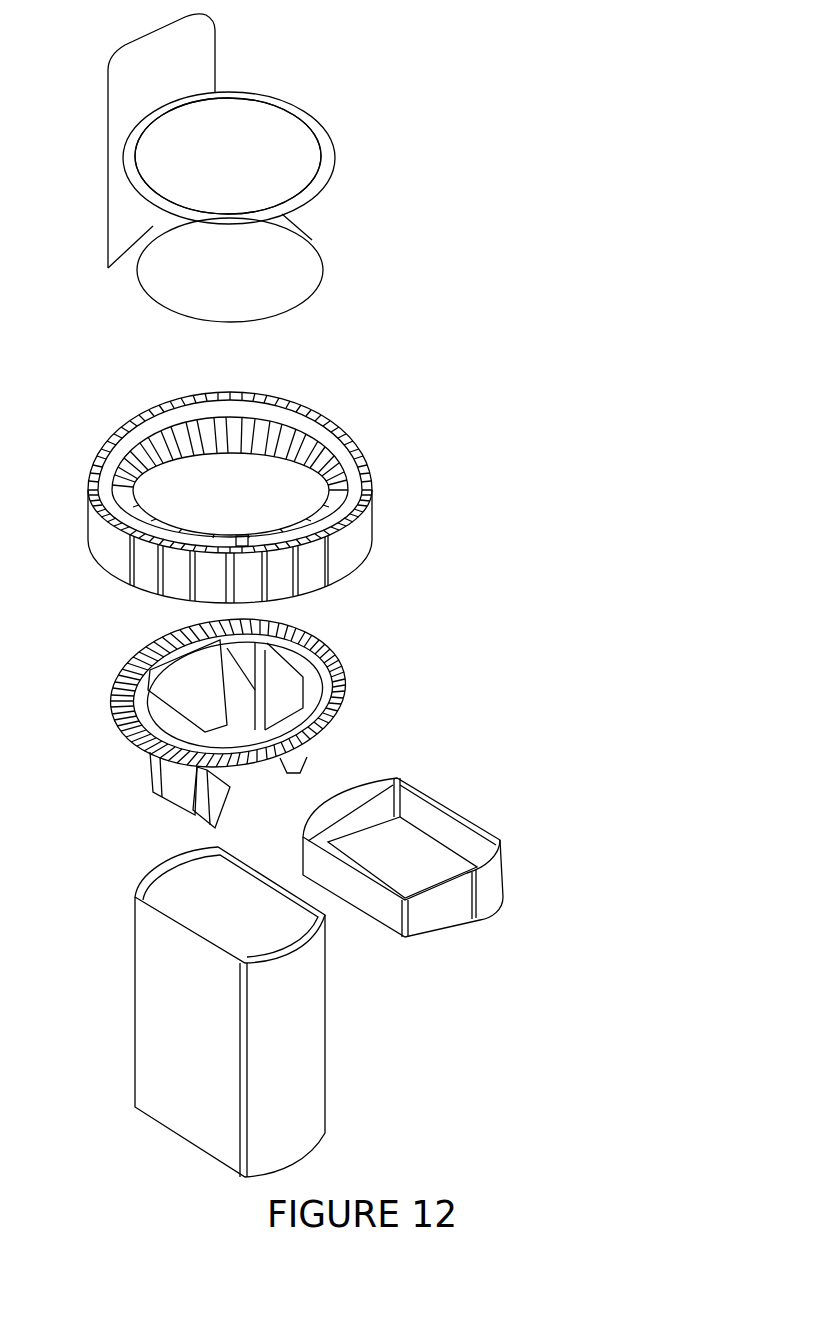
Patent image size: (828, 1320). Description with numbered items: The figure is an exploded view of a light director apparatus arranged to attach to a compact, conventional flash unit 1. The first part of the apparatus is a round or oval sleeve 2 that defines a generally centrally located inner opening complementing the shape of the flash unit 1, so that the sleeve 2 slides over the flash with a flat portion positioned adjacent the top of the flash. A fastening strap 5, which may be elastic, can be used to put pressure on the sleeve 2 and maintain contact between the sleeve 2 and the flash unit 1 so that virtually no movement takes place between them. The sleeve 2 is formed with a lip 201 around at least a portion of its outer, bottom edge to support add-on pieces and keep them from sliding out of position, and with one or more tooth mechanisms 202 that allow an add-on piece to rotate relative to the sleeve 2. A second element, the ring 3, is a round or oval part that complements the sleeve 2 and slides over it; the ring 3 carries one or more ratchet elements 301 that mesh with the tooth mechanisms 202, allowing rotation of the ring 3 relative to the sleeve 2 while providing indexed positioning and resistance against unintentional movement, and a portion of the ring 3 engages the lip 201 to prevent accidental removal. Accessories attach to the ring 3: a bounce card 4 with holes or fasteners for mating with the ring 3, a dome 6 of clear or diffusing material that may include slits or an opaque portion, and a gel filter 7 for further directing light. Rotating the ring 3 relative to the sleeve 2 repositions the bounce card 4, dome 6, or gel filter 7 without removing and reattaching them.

The flash unit 1 is at (330, 1021).
The sleeve 2 is at (354, 717).
The lip 201 is at (348, 696).
The tooth mechanisms 202 is at (298, 753).
The ring 3 is at (271, 497).
The ratchet elements 301 is at (305, 463).
The bounce card 4 is at (213, 182).
The fastening strap 5 is at (500, 840).
The dome 6 is at (283, 97).
The gel filter 7 is at (288, 308).